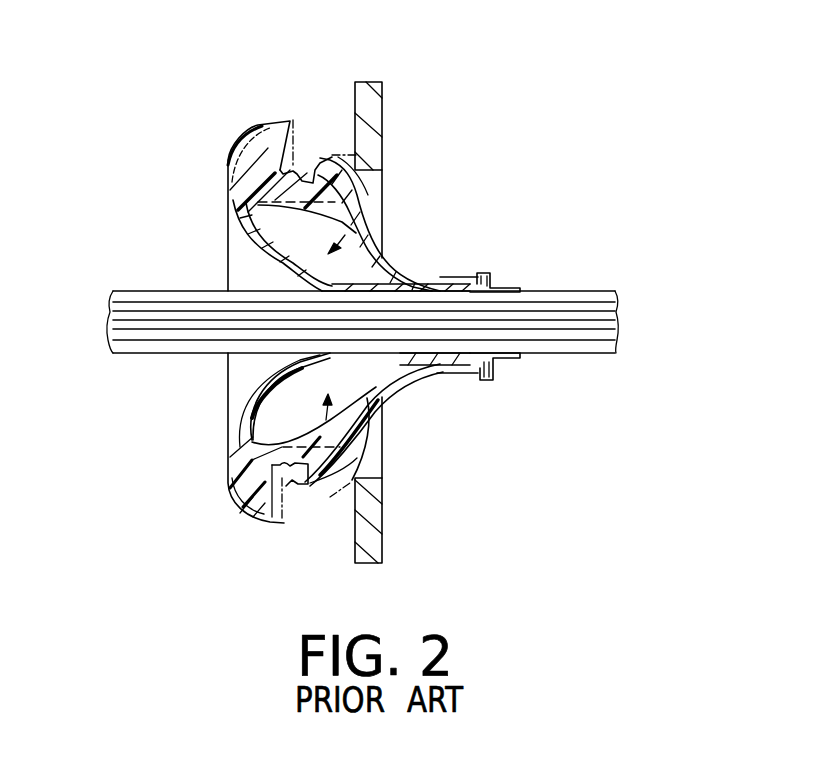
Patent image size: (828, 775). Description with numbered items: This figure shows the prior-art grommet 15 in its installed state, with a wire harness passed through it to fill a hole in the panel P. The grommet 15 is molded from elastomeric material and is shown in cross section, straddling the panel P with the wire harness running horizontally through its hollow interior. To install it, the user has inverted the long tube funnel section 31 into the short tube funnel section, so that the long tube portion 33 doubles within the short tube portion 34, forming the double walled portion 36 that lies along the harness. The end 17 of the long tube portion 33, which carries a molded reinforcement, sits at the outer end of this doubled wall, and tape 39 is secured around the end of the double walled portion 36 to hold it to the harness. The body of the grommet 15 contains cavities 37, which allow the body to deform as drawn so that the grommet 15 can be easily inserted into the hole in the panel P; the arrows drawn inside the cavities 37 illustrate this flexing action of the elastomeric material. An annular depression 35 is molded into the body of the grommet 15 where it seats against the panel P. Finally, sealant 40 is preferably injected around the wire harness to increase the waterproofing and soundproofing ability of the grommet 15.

The grommet 15 is at (190, 162).
The end of long tube portion 17 is at (503, 278).
The long tube funnel section 31 is at (262, 248).
The long tube portion 33 is at (456, 375).
The short tube portion 34 is at (383, 392).
The annular depression 35 is at (303, 160).
The double walled portion 36 is at (420, 273).
The cavities 37 is at (353, 262).
The tape 39 is at (500, 378).
The sealant 40 is at (253, 380).
The panel P is at (383, 122).